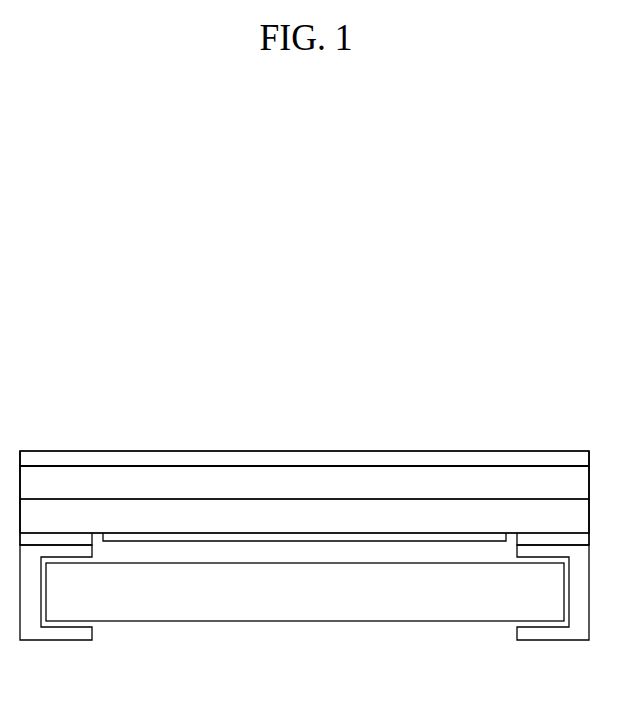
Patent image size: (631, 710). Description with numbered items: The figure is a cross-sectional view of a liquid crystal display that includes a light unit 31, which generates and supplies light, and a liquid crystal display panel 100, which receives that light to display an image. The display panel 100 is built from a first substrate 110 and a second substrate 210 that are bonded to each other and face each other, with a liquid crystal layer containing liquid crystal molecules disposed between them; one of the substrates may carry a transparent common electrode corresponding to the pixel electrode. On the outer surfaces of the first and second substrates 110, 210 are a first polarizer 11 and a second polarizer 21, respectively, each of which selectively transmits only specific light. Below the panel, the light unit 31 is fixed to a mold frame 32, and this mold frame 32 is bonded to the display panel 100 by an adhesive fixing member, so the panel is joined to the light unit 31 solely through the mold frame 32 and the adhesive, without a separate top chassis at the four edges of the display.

The liquid crystal display panel 100 is at (188, 400).
The second polarizer 21 is at (203, 451).
The second substrate 210 is at (252, 482).
The first substrate 110 is at (320, 516).
The first polarizer 11 is at (368, 536).
The mold frame 32 is at (57, 632).
The light unit 31 is at (421, 595).